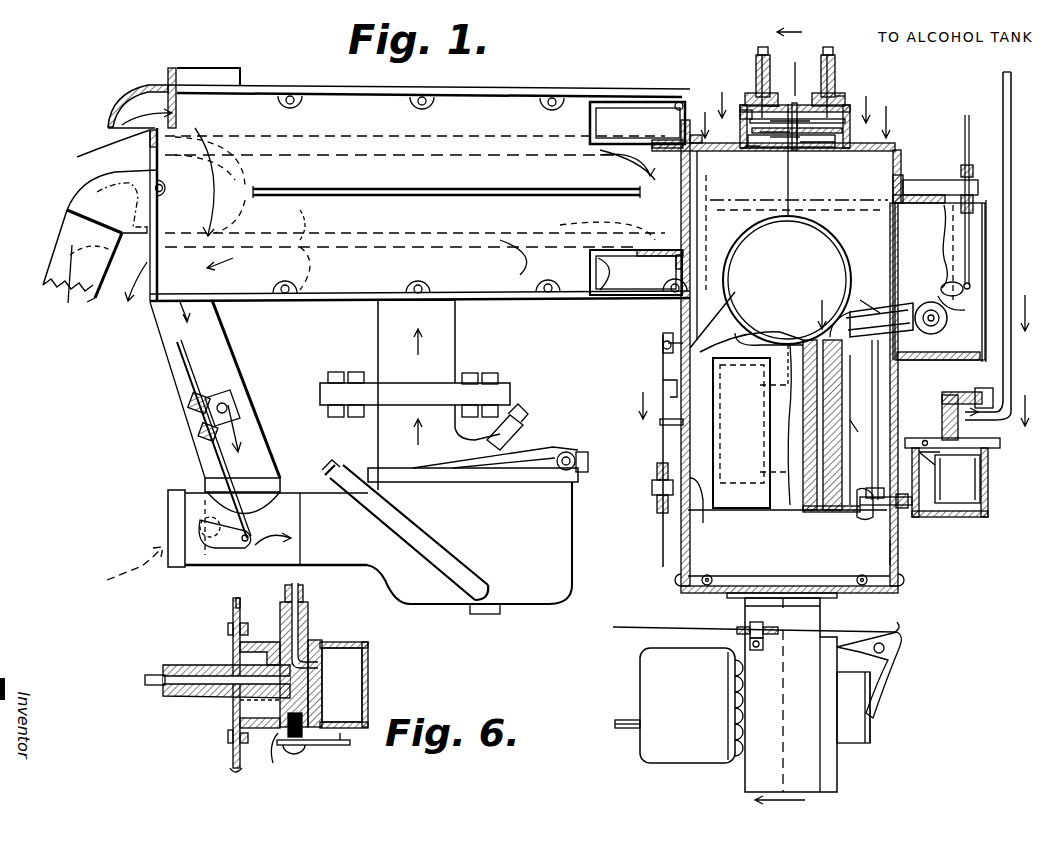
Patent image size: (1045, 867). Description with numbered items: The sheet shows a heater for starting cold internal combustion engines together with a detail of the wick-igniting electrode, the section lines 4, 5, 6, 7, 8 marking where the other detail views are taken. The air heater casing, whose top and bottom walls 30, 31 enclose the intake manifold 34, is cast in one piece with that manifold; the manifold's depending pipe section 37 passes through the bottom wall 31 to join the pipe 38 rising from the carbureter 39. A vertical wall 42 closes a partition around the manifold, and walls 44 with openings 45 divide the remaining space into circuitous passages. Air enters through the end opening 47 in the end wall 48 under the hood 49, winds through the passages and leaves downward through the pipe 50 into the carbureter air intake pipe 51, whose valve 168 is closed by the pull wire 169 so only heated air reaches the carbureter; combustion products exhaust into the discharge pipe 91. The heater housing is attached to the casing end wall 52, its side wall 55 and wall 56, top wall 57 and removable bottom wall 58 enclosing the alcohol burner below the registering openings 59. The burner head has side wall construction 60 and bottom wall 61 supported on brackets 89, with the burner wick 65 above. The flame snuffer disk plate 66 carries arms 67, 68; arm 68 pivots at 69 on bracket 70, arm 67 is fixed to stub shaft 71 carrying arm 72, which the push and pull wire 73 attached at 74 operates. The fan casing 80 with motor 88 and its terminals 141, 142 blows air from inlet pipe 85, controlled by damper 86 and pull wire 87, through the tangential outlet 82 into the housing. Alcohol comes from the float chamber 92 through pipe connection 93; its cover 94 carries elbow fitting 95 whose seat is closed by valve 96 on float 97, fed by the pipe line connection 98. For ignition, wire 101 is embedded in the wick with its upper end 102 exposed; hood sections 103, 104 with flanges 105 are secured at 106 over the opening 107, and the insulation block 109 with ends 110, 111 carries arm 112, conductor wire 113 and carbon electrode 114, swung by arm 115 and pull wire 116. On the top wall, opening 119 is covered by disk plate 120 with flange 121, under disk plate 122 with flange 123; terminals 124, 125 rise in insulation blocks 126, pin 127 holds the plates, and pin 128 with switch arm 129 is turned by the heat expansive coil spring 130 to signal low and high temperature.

In FIG. 1, the top wall 30 is at (326, 94).
In FIG. 1, the bottom wall 31 is at (540, 300).
In FIG. 1, the intake manifold 34 is at (320, 252).
In FIG. 1, the depending pipe section 37 is at (455, 354).
In FIG. 1, the pipe 38 is at (372, 437).
In FIG. 1, the carbureter 39 is at (560, 550).
In FIG. 1, the vertical wall 42 is at (1018, 420).
In FIG. 1, the walls 44 is at (360, 137).
In FIG. 1, the openings 45 is at (650, 163).
In FIG. 1, the end opening 47 is at (77, 157).
In FIG. 1, the end wall 48 is at (112, 292).
In FIG. 1, the hood 49 is at (125, 102).
In FIG. 1, the pipe 50 is at (222, 351).
In FIG. 1, the air intake pipe 51 is at (260, 568).
In FIG. 1, the end wall 52 is at (685, 268).
In FIG. 1, the side wall 55 is at (663, 423).
In FIG. 1, the end wall 56 is at (893, 553).
In FIG. 6, the end wall 56 is at (242, 606).
In FIG. 1, the top wall 57 is at (896, 149).
In FIG. 1, the bottom wall 58 is at (870, 596).
In FIG. 1, the registering openings 59 is at (681, 165).
In FIG. 1, the side wall construction 60 is at (858, 432).
In FIG. 1, the bottom wall 61 is at (838, 508).
In FIG. 1, the burner wick 65 is at (758, 340).
In FIG. 1, the flanged disk plate 66 is at (810, 252).
In FIG. 1, the arm 67 is at (700, 322).
In FIG. 1, the arm 68 is at (870, 300).
In FIG. 1, the pivot 69 is at (876, 370).
In FIG. 1, the bracket 70 is at (880, 342).
In FIG. 1, the stub shaft 71 is at (660, 345).
In FIG. 1, the arm 72 is at (660, 396).
In FIG. 1, the push and pull wire 73 is at (663, 452).
In FIG. 1, the attachment point 74 is at (720, 395).
In FIG. 1, the fan blower casing 80 is at (755, 777).
In FIG. 1, the tangential outlet pipe 82 is at (810, 609).
In FIG. 1, the air inlet pipe 85 is at (855, 735).
In FIG. 1, the hinged damper 86 is at (872, 712).
In FIG. 1, the pull wire 87 is at (668, 630).
In FIG. 1, the motor 88 is at (658, 668).
In FIG. 1, the brackets 89 is at (700, 512).
In FIG. 1, the discharge pipe 91 is at (63, 248).
In FIG. 1, the float chamber 92 is at (990, 487).
In FIG. 1, the pipe connection 93 is at (910, 508).
In FIG. 1, the cover 94 is at (975, 444).
In FIG. 1, the elbow fitting 95 is at (940, 405).
In FIG. 1, the valve 96 is at (985, 456).
In FIG. 1, the float 97 is at (960, 500).
In FIG. 1, the pipe line connection 98 is at (1004, 362).
In FIG. 1, the wire 101 is at (830, 515).
In FIG. 1, the upper end 102 is at (800, 338).
In FIG. 1, the hood section 103 is at (900, 190).
In FIG. 6, the hood section 103 is at (240, 648).
In FIG. 1, the hood section 104 is at (935, 195).
In FIG. 6, the hood section 104 is at (362, 646).
In FIG. 6, the flanges 105 is at (232, 760).
In FIG. 1, the fastening 106 is at (900, 365).
In FIG. 6, the fastening 106 is at (247, 628).
In FIG. 1, the opening 107 is at (895, 250).
In FIG. 6, the opening 107 is at (235, 712).
In FIG. 1, the insulation block 109 is at (940, 332).
In FIG. 6, the insulation block 109 is at (322, 688).
In FIG. 6, the end portion 110 is at (308, 626).
In FIG. 1, the end portion 111 is at (988, 300).
In FIG. 6, the end portion 111 is at (272, 742).
In FIG. 1, the arm 112 is at (940, 300).
In FIG. 6, the arm 112 is at (210, 665).
In FIG. 6, the conductor wire 113 is at (322, 660).
In FIG. 1, the carbon electrode 114 is at (815, 240).
In FIG. 6, the carbon electrode 114 is at (150, 690).
In FIG. 1, the arm 115 is at (944, 270).
In FIG. 6, the arm 115 is at (322, 745).
In FIG. 1, the pull wire 116 is at (968, 252).
In FIG. 6, the pull wire 116 is at (340, 733).
In FIG. 1, the opening 119 is at (748, 155).
In FIG. 1, the disk plate 120 is at (850, 136).
In FIG. 1, the annular flange 121 is at (752, 118).
In FIG. 1, the disk plate 122 is at (798, 118).
In FIG. 1, the annular flange 123 is at (750, 98).
In FIG. 1, the terminal 124 is at (782, 120).
In FIG. 1, the terminal 125 is at (838, 58).
In FIG. 1, the insulation blocks 126 is at (797, 62).
In FIG. 1, the pin 127 is at (775, 106).
In FIG. 1, the pin 128 is at (812, 152).
In FIG. 1, the switch arm 129 is at (765, 150).
In FIG. 1, the heat expansive coil spring 130 is at (783, 150).
In FIG. 1, the terminal 141 is at (628, 721).
In FIG. 1, the terminal 142 is at (626, 730).
In FIG. 1, the valve 168 is at (110, 572).
In FIG. 1, the pull wire 169 is at (183, 372).
In FIG. 1, the section line 4- 4 is at (809, 33).
In FIG. 1, the section line 5- 5 is at (643, 393).
In FIG. 1, the section line 6- 6 is at (823, 303).
In FIG. 1, the section line 7- 7 is at (721, 95).
In FIG. 1, the section line 8- 8 is at (704, 114).